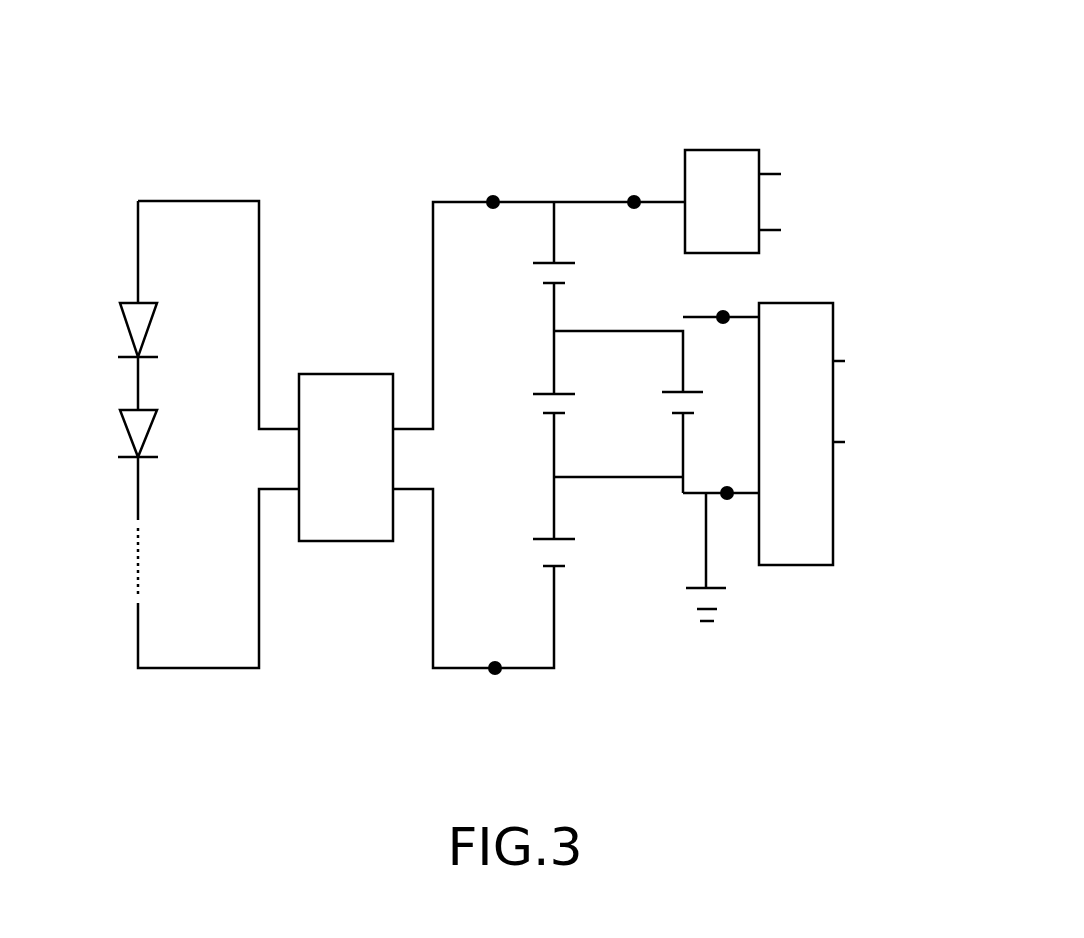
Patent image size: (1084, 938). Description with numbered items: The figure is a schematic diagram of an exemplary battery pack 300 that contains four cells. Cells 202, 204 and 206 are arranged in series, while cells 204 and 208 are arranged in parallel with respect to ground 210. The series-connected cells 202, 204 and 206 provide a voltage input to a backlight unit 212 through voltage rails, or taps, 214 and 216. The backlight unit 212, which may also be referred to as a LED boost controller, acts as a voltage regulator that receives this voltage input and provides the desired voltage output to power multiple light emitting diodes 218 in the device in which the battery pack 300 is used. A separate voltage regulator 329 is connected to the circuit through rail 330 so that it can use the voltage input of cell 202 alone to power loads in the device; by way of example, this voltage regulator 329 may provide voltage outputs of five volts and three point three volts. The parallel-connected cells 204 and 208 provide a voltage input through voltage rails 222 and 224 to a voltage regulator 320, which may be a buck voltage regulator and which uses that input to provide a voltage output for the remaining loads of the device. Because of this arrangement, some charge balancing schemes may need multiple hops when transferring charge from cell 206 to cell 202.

The battery pack 300 is at (452, 33).
The light emitting diodes 218 is at (122, 420).
The backlight unit 212 is at (343, 374).
The voltage rail 214 is at (493, 194).
The voltage rail 216 is at (492, 676).
The cell 202 is at (518, 268).
The cell 204 is at (532, 401).
The cell 206 is at (530, 549).
The cell 208 is at (670, 403).
The ground 210 is at (690, 613).
The voltage rail 222 is at (723, 310).
The voltage rail 224 is at (727, 500).
The voltage regulator 329 is at (728, 150).
The voltage regulator 320 is at (790, 565).
The rail 330 is at (634, 194).